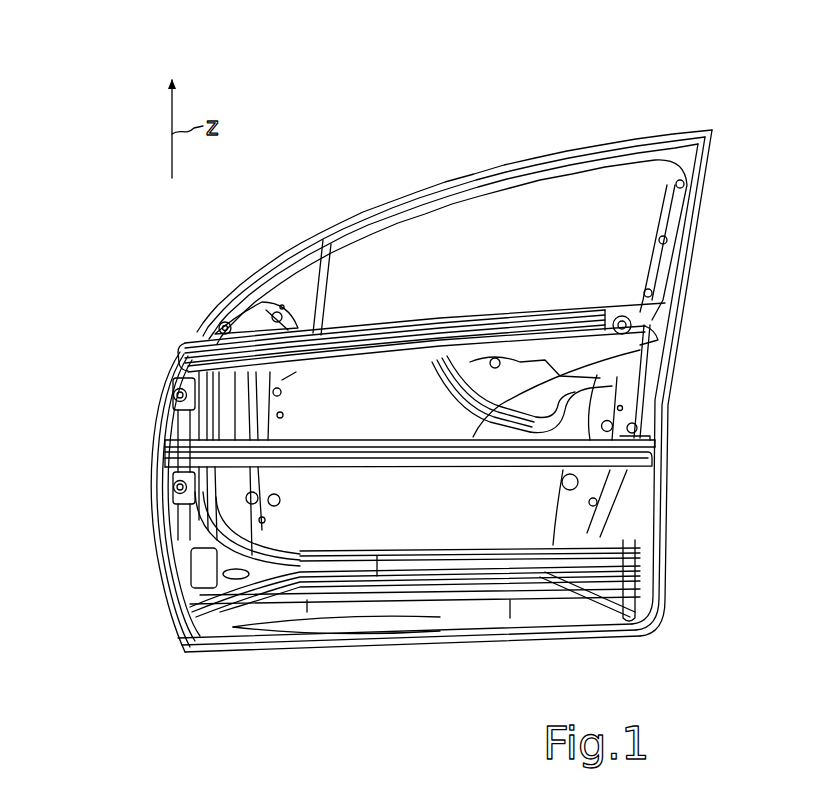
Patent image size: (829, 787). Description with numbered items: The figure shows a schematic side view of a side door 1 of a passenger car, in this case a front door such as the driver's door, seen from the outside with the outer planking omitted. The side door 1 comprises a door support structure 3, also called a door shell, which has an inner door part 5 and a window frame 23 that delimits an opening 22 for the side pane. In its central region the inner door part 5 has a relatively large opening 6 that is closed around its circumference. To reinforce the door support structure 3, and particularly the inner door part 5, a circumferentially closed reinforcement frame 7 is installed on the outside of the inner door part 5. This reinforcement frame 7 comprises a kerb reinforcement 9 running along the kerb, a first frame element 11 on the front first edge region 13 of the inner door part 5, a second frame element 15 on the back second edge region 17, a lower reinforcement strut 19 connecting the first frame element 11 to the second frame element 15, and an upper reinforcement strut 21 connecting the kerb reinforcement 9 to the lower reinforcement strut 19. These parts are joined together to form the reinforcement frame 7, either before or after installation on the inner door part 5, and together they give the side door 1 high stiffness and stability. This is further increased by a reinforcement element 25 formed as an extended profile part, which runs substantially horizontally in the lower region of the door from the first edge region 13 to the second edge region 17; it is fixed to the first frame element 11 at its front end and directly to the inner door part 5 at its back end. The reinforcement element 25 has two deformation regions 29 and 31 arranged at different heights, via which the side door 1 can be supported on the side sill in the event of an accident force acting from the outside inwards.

The side door 1 is at (518, 105).
The door support structure 3 is at (116, 417).
The inner door part 5 is at (262, 393).
The opening 6 is at (412, 522).
The reinforcement frame 7 is at (333, 323).
The kerb reinforcement 9 is at (403, 340).
The first frame element 11 is at (168, 413).
The first edge region 13 is at (137, 496).
The second frame element 15 is at (673, 440).
The second edge region 17 is at (676, 472).
The lower reinforcement strut 19 is at (205, 520).
The upper reinforcement strut 21 is at (615, 385).
The opening 22 is at (548, 253).
The window frame 23 is at (620, 133).
The reinforcement element 25 is at (438, 605).
The deformation region 29 is at (542, 550).
The deformation region 31 is at (337, 597).